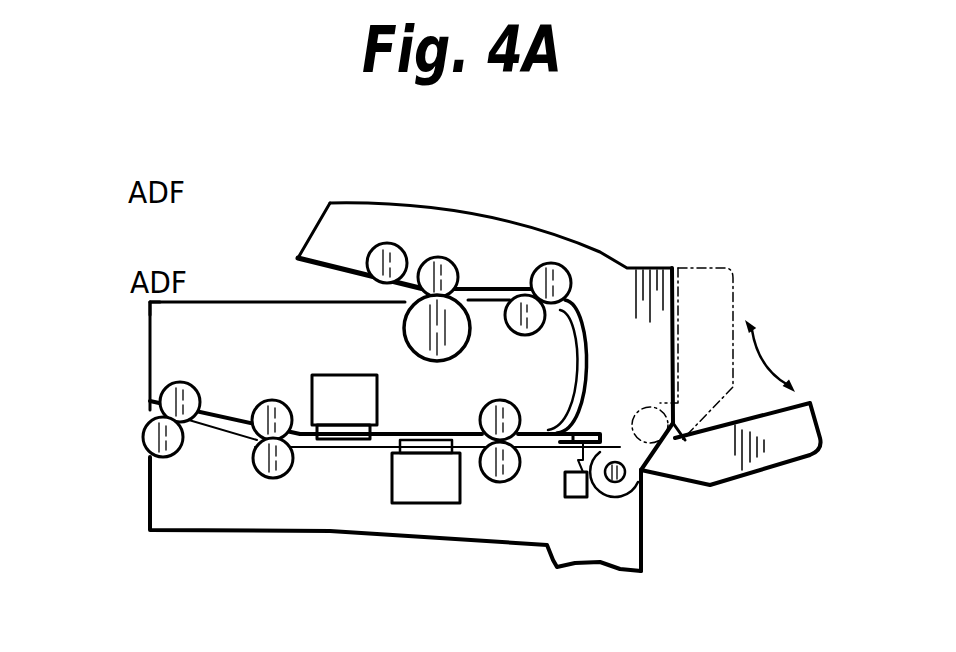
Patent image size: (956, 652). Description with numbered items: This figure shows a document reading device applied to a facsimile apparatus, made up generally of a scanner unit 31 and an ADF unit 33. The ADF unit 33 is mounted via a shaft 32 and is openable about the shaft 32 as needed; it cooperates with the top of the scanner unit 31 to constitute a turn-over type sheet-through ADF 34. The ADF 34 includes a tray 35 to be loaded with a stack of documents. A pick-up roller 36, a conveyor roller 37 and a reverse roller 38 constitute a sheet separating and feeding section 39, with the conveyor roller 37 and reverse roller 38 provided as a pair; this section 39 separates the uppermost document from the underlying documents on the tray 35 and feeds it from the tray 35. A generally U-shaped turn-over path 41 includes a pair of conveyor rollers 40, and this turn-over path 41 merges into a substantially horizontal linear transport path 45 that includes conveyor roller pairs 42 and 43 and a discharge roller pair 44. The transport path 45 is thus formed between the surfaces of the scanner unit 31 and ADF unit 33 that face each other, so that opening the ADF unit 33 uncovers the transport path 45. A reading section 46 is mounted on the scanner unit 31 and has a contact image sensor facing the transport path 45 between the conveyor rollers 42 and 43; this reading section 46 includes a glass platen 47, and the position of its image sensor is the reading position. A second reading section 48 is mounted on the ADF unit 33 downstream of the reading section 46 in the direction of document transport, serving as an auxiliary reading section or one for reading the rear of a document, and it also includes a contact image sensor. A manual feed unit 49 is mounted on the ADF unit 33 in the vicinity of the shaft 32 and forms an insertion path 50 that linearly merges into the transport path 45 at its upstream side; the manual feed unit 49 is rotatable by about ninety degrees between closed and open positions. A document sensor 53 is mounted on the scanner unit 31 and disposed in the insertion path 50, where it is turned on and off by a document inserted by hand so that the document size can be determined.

The scanner unit 31 is at (175, 512).
The shaft 32 is at (643, 472).
The ADF unit 33 is at (290, 333).
The turn-over type sheet-through ADF 34 is at (138, 310).
The tray 35 is at (333, 300).
The pick-up roller 36 is at (385, 257).
The conveyor roller 37 is at (452, 323).
The reverse roller 38 is at (447, 268).
The sheet separating and feeding section 39 is at (427, 240).
The conveyor rollers 40 is at (560, 277).
The turn-over path 41 is at (585, 357).
The conveyor roller pair 42 is at (533, 450).
The conveyor roller pair 43 is at (263, 470).
The discharge roller pair 44 is at (153, 423).
The transport path 45 is at (470, 437).
The reading section 46 is at (443, 483).
The glass platen 47 is at (415, 447).
The reading section 48 is at (355, 403).
The manual feed unit 49 is at (723, 463).
The insertion path 50 is at (640, 533).
The document sensor 53 is at (580, 497).